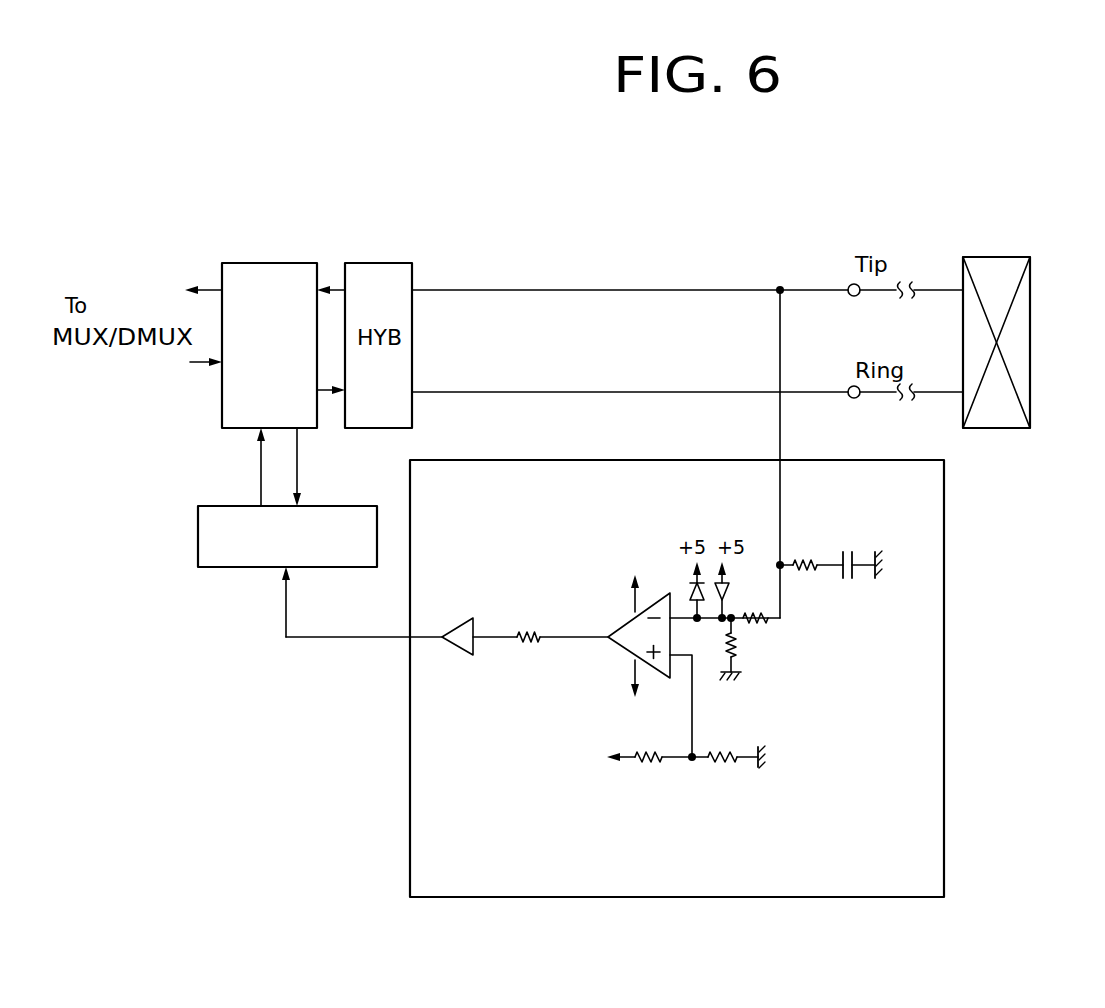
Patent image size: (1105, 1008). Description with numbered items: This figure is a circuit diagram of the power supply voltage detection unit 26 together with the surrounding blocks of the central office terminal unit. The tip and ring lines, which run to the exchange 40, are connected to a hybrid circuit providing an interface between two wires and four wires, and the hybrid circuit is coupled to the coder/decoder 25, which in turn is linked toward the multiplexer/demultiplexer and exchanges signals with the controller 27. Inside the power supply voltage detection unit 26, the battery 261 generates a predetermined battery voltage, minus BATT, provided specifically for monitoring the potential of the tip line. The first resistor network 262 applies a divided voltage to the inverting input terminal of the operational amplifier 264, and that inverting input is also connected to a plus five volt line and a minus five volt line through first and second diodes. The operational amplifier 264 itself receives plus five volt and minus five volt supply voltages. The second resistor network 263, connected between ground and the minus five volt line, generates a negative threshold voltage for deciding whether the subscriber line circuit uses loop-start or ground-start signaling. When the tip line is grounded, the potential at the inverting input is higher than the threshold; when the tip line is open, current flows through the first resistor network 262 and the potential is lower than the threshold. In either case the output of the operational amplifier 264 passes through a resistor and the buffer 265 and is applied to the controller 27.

The coder/decoder (codec) 25 is at (284, 263).
The controller 27 is at (351, 506).
The exchange 40 is at (1030, 298).
The power supply voltage detection unit 26 is at (944, 521).
The battery 261 is at (813, 582).
The first resistor network 262 is at (773, 685).
The second resistor network 263 is at (785, 772).
The operational amplifier 264 is at (624, 630).
The buffer 265 is at (455, 652).